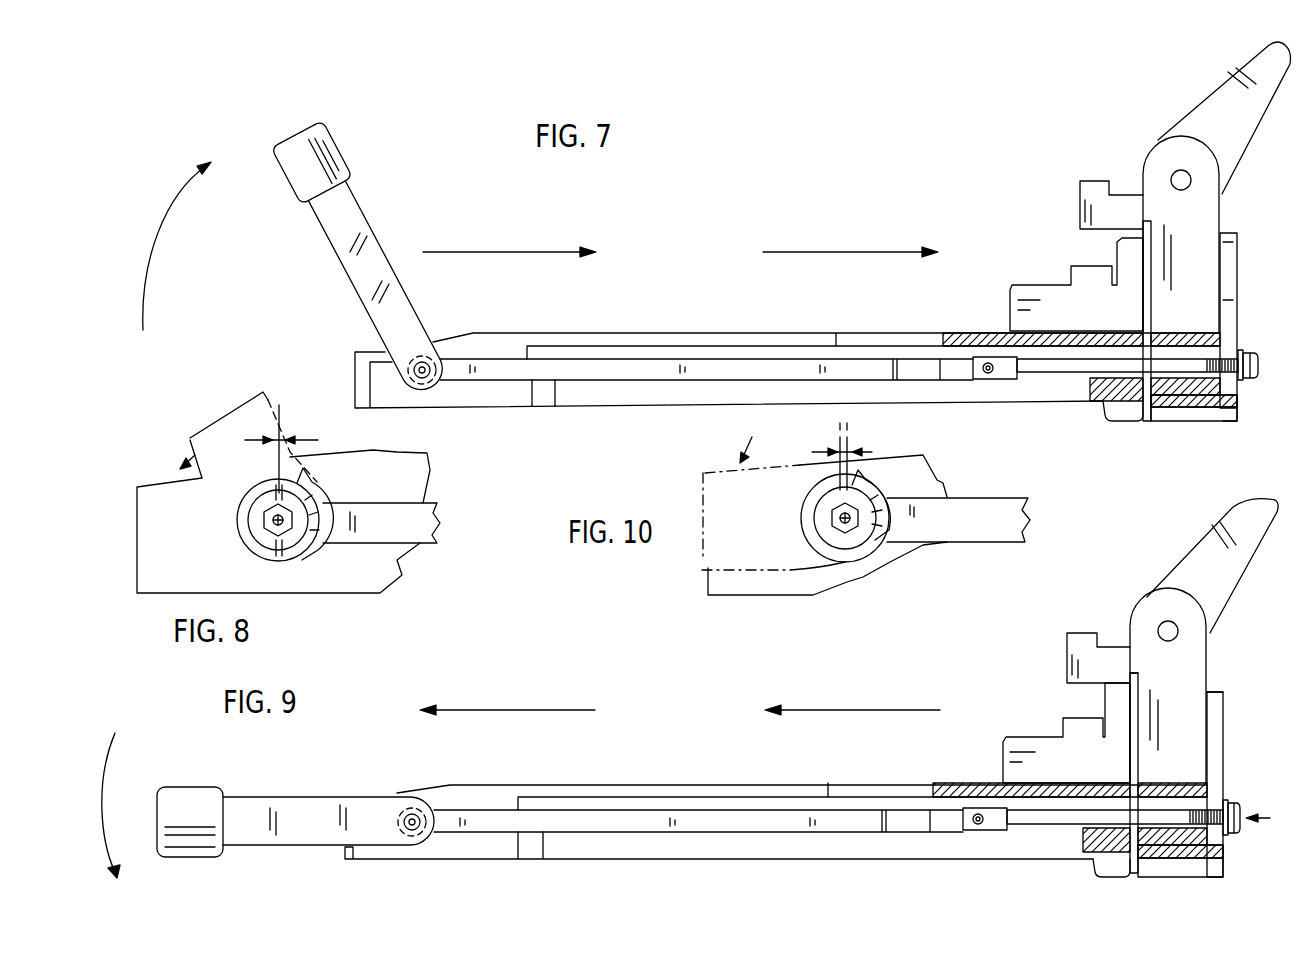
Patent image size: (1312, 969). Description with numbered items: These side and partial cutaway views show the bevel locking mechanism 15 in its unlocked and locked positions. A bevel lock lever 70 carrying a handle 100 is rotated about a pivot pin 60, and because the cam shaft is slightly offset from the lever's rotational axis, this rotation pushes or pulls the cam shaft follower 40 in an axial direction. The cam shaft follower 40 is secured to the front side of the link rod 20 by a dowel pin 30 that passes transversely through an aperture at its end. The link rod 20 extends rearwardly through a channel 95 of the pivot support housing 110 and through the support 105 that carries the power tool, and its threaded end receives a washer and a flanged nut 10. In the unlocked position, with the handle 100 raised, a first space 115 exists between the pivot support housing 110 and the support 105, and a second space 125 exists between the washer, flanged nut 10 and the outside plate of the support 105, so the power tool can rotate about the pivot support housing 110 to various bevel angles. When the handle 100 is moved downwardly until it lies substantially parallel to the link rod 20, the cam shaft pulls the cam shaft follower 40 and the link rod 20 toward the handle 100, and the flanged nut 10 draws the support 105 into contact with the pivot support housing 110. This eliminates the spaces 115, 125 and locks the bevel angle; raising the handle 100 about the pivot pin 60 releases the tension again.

In FIG. 7, the flanged nut 10 is at (1257, 353).
In FIG. 7, the locking mechanism 15 is at (1243, 349).
In FIG. 7, the link rod 20 is at (1060, 373).
In FIG. 9, the link rod 20 is at (1028, 817).
In FIG. 7, the dowel pin 30 is at (985, 380).
In FIG. 9, the dowel pin 30 is at (978, 807).
In FIG. 7, the cam shaft follower 40 is at (630, 380).
In FIG. 8, the cam shaft follower 40 is at (381, 523).
In FIG. 10, the cam shaft follower 40 is at (983, 522).
In FIG. 9, the cam shaft follower 40 is at (587, 812).
In FIG. 7, the pivot pin 60 is at (430, 384).
In FIG. 8, the pivot pin 60 is at (297, 560).
In FIG. 10, the pivot pin 60 is at (857, 577).
In FIG. 9, the pivot pin 60 is at (412, 822).
In FIG. 7, the bevel lock lever 70 is at (358, 208).
In FIG. 8, the bevel lock lever 70 is at (270, 392).
In FIG. 9, the bevel lock lever 70 is at (318, 797).
In FIG. 7, the channel 95 is at (1198, 408).
In FIG. 9, the channel 95 is at (1195, 783).
In FIG. 7, the handle 100 is at (288, 142).
In FIG. 9, the handle 100 is at (172, 790).
In FIG. 7, the support 105 is at (1213, 264).
In FIG. 7, the pivot support housing 110 is at (1104, 301).
In FIG. 7, the first space 115 is at (1146, 421).
In FIG. 7, the second space 125 is at (1243, 398).